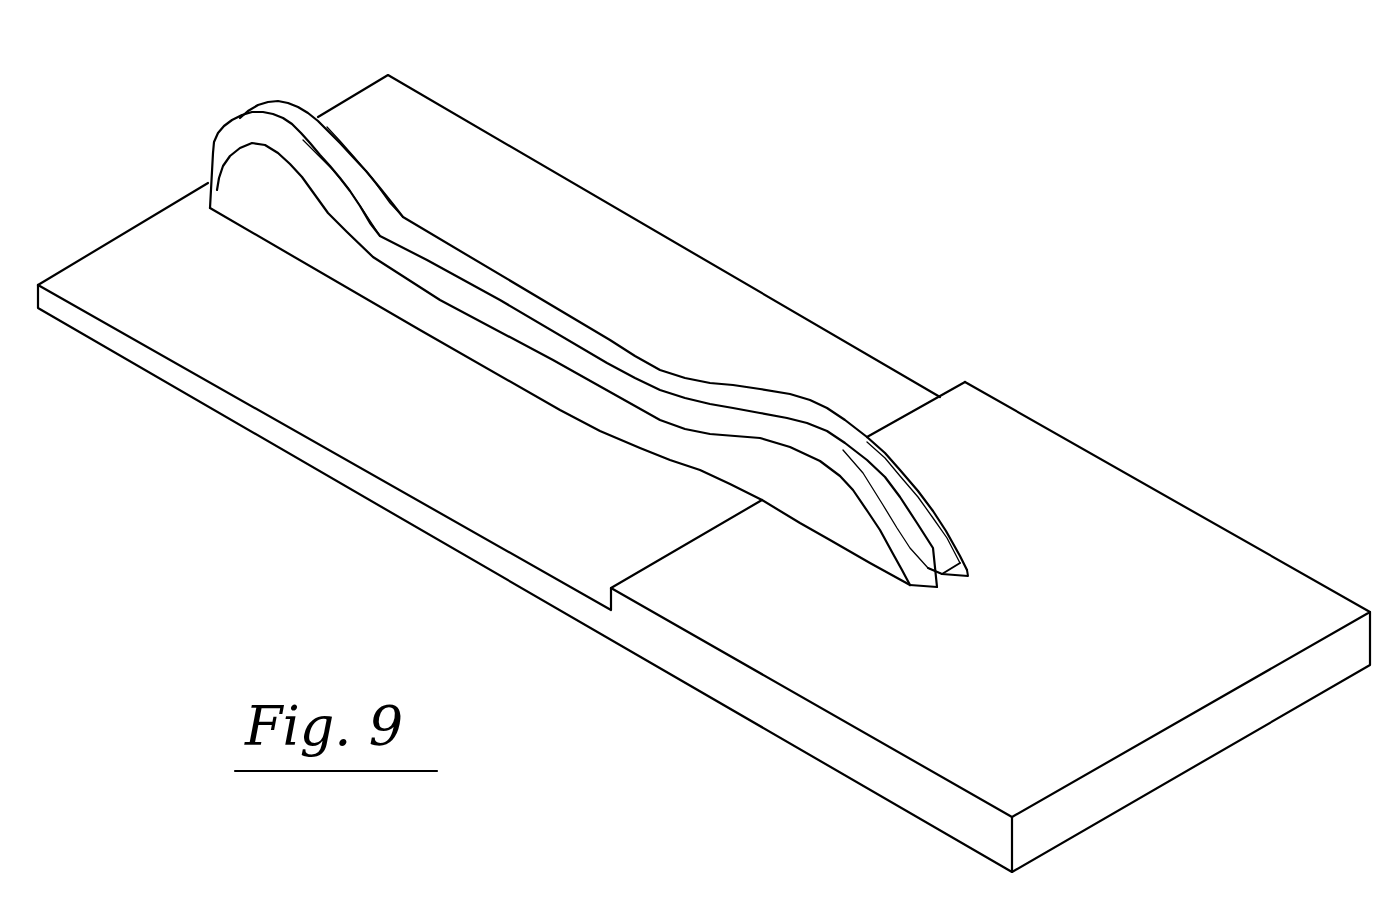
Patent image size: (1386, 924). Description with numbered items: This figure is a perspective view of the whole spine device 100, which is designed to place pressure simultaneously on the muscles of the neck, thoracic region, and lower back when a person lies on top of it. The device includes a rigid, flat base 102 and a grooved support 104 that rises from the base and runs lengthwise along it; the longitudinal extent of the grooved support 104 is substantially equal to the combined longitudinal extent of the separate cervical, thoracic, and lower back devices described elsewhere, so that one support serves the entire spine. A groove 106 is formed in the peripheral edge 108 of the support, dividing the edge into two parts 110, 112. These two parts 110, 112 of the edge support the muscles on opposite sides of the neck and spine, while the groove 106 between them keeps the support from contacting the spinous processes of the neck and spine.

The whole spine device 100 is at (752, 150).
The base 102 is at (838, 672).
The grooved support 104 is at (485, 352).
The groove 106 is at (922, 545).
The peripheral edge 108 is at (588, 322).
The part of peripheral edge 110 is at (258, 116).
The part of peripheral edge 112 is at (310, 113).